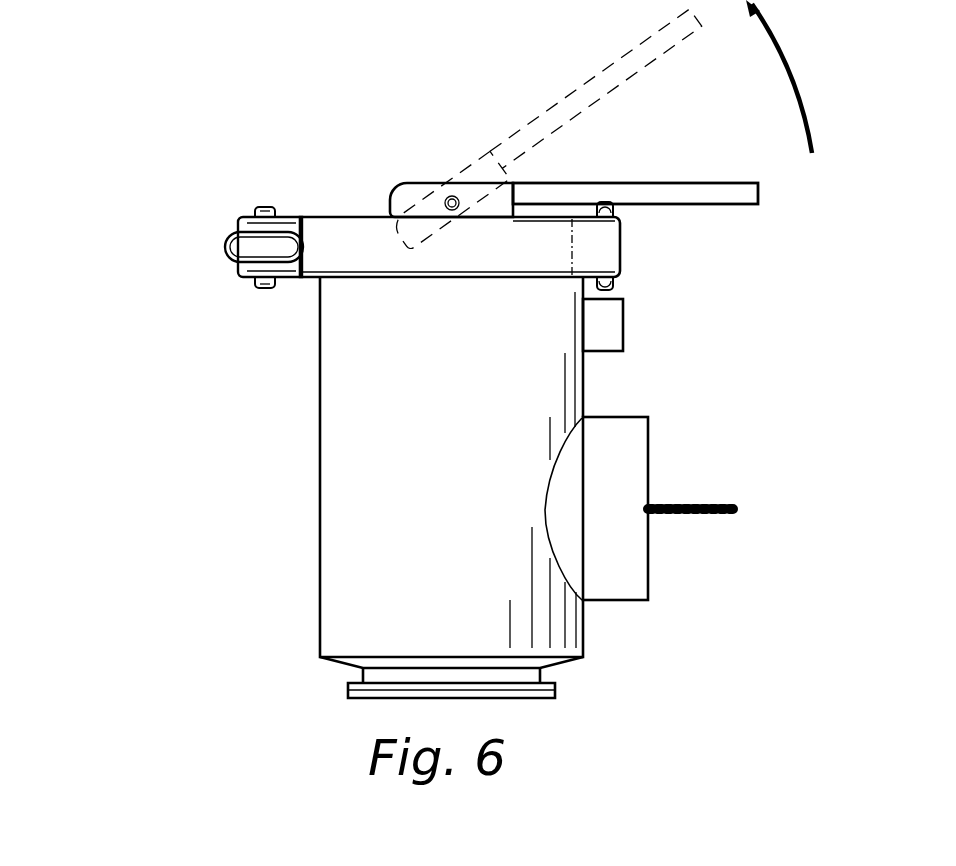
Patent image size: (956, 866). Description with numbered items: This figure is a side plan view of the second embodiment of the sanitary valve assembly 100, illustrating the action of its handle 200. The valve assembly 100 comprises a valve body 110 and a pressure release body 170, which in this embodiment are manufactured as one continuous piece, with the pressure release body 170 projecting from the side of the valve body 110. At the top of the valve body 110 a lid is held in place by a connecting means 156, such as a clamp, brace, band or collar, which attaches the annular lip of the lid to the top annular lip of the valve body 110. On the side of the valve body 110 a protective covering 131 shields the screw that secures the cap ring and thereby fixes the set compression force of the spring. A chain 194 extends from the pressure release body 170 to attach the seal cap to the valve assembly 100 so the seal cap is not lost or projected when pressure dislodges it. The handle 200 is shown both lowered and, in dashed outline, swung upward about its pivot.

The valve assembly 100 is at (100, 262).
The valve body 110 is at (304, 493).
The protective covering 131 is at (625, 325).
The connecting means 156 is at (324, 243).
The pressure release body 170 is at (613, 618).
The chain 194 is at (705, 506).
The handle 200 is at (582, 168).